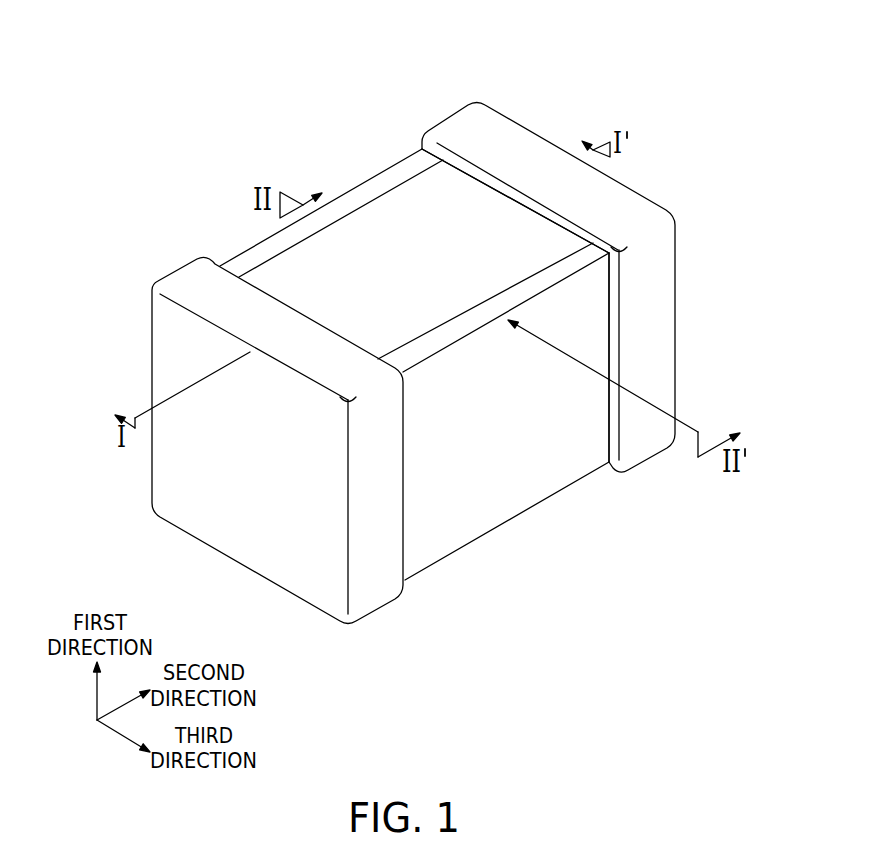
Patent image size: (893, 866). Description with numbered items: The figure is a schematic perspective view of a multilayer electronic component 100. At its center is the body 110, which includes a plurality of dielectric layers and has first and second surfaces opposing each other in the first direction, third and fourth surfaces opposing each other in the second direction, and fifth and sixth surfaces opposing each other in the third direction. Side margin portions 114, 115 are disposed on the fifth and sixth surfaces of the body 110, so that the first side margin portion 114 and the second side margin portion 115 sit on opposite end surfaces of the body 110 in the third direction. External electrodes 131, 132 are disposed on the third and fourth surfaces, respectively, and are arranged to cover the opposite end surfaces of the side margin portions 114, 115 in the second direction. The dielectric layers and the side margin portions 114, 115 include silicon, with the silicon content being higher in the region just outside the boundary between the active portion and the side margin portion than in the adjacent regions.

The multilayer electronic component 100 is at (270, 47).
The body 110 is at (418, 203).
The first side margin portion 114 is at (347, 202).
The second side margin portion 115 is at (520, 485).
The external electrode 131 is at (190, 278).
The external electrode 132 is at (463, 110).